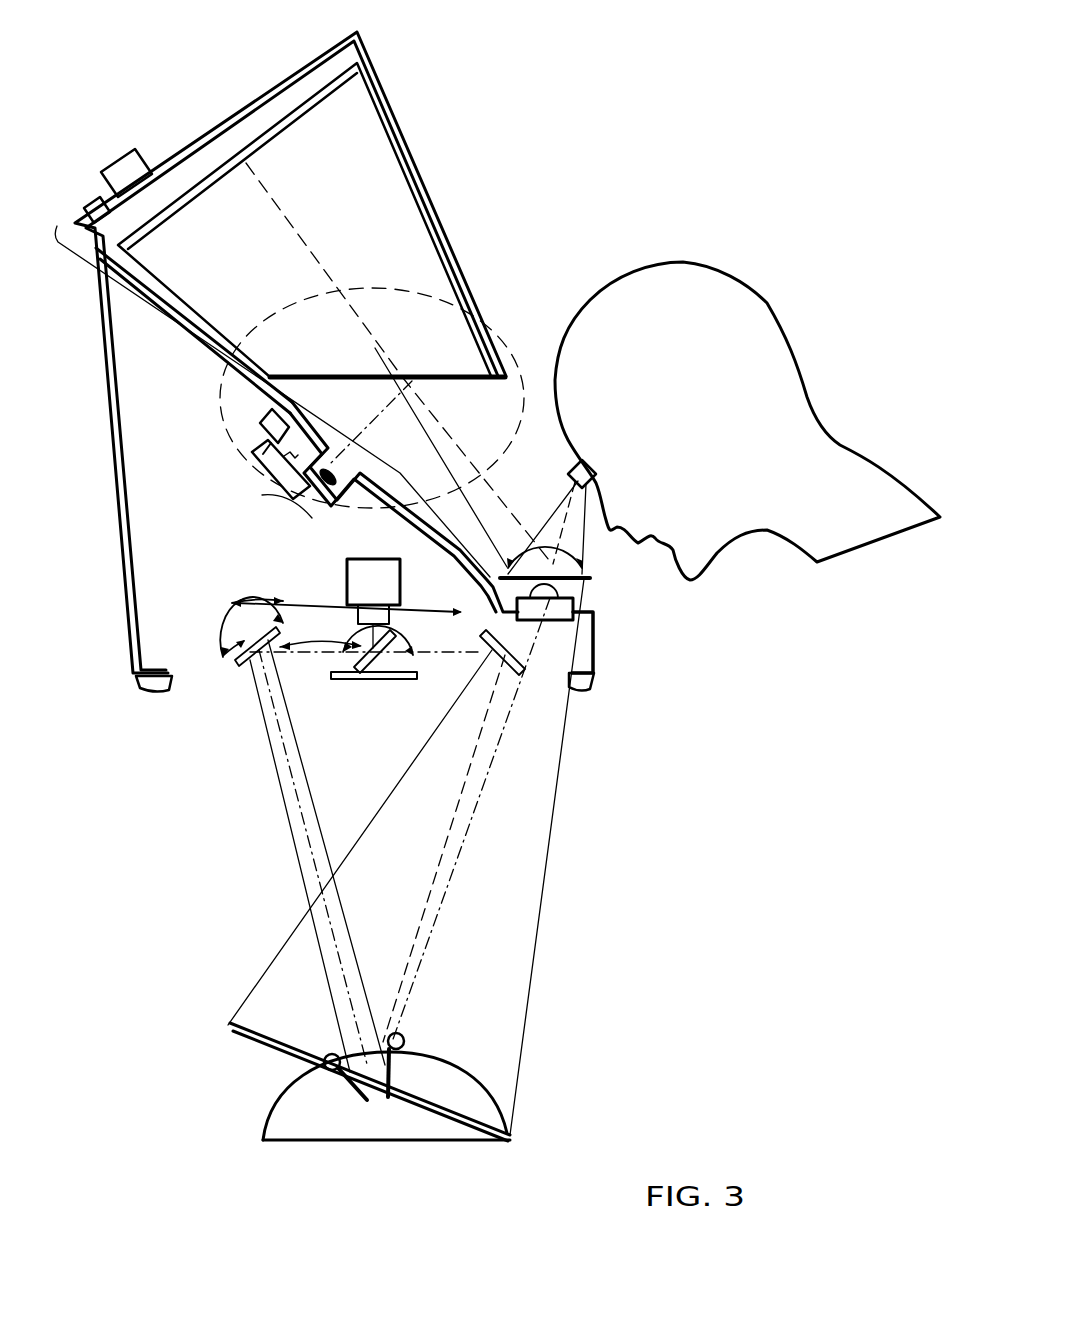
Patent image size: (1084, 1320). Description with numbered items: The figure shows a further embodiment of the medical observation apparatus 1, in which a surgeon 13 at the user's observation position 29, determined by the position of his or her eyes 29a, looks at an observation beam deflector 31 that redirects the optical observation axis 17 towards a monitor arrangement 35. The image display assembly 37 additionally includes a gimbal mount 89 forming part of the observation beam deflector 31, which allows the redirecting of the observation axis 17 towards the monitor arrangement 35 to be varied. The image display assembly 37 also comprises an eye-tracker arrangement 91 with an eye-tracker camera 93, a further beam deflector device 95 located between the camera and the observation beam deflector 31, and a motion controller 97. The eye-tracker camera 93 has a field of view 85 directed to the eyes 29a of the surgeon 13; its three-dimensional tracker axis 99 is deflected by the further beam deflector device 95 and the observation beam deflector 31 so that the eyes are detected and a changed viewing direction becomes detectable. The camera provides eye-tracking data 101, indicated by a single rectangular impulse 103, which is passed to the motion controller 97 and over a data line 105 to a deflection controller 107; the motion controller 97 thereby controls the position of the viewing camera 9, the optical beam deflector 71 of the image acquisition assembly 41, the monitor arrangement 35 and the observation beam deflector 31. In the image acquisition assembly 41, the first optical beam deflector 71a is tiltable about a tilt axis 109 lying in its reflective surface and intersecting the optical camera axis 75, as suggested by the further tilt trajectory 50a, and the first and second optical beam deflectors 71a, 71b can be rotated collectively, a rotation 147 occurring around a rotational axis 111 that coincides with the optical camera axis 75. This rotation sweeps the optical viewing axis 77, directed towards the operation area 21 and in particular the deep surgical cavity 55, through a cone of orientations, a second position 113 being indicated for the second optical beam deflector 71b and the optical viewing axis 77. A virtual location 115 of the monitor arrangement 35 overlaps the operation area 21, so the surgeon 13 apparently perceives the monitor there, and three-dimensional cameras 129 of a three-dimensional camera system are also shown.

The medical observation apparatus 1 is at (491, 141).
The viewing camera 9 is at (382, 597).
The surgeon 13 is at (762, 312).
The optical observation axis 17 is at (283, 213).
The operation area 21 is at (311, 1046).
The user's observation position 29 is at (672, 459).
The eye 29a is at (609, 475).
The observation beam deflector 31 is at (603, 608).
The monitor arrangement 35 is at (203, 174).
The image display assembly 37 is at (275, 505).
The image acquisition assembly 41 is at (424, 540).
The further tilt trajectory 50a is at (331, 593).
The deep surgical cavity 55 is at (350, 1090).
The optical beam deflector 71 is at (240, 667).
The first optical beam deflector 71a is at (365, 678).
The second optical beam deflector 71b is at (230, 669).
The optical camera axis 75 is at (500, 857).
The optical viewing axis 77 is at (297, 800).
The field of view 85 is at (587, 460).
The gimbal mount 89 is at (576, 600).
The eye-tracker arrangement 91 is at (445, 305).
The eye-tracker camera 93 is at (333, 500).
The further beam deflector device 95 is at (308, 371).
The motion controller 97 is at (258, 430).
The 3D tracker axis 99 is at (383, 408).
The eye-tracking data 101 is at (229, 469).
The rectangular impulse 103 is at (262, 470).
The data line 105 is at (160, 290).
The deflection controller 107 is at (113, 170).
The tilt axis 109 is at (500, 857).
The rotational axis 111 is at (500, 857).
The second position 113 is at (514, 672).
The virtual location 115 is at (230, 1027).
The 3D camera 129 is at (596, 684).
The rotation 147 is at (452, 660).